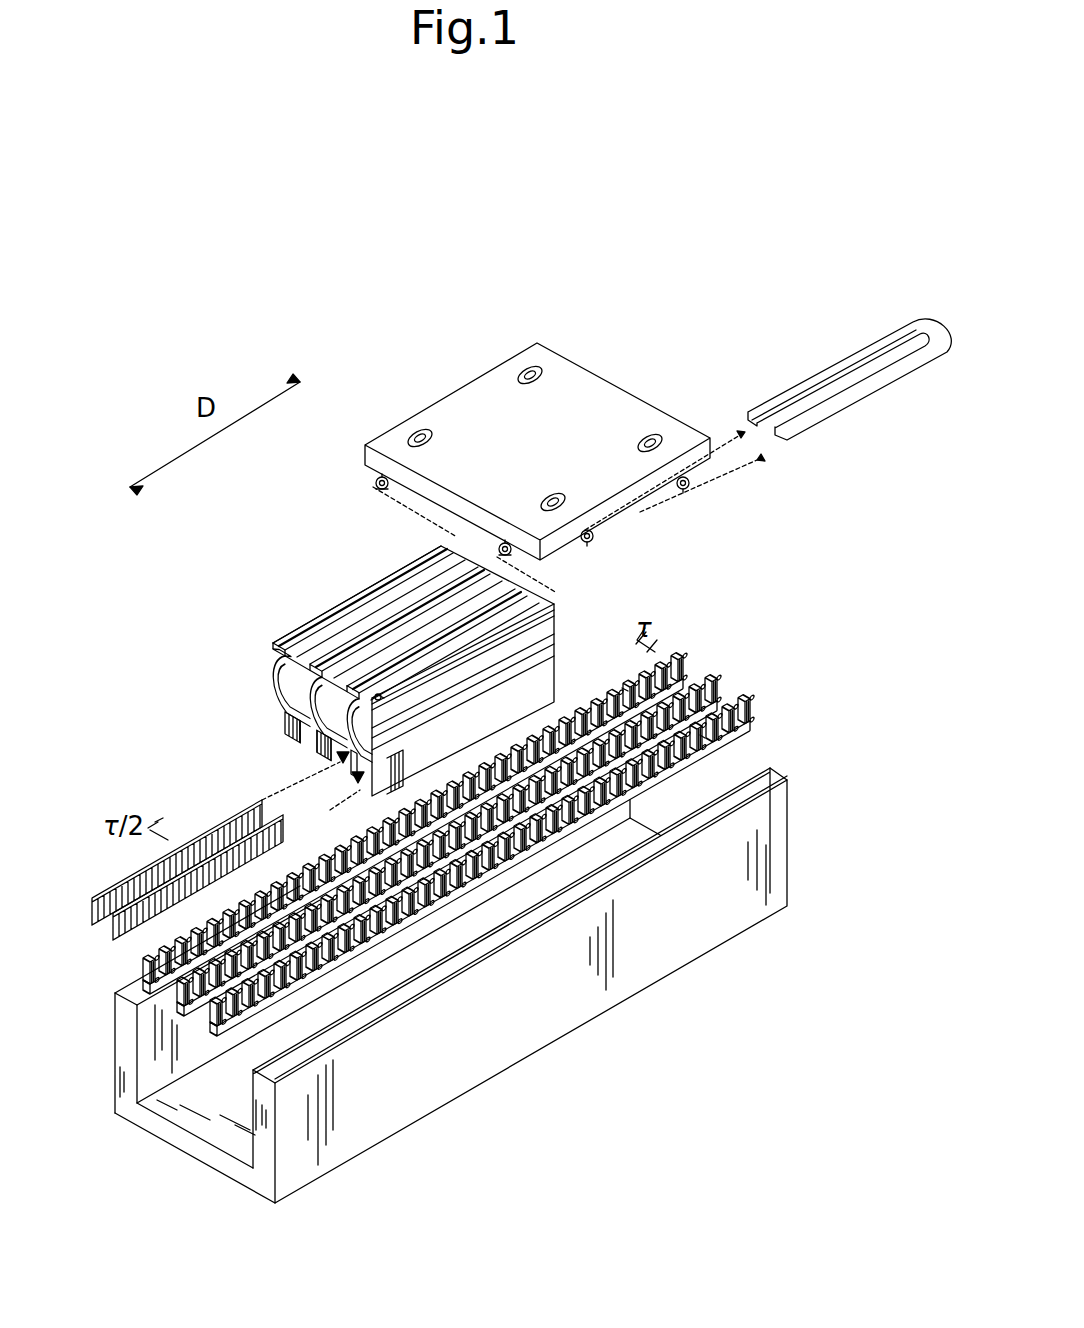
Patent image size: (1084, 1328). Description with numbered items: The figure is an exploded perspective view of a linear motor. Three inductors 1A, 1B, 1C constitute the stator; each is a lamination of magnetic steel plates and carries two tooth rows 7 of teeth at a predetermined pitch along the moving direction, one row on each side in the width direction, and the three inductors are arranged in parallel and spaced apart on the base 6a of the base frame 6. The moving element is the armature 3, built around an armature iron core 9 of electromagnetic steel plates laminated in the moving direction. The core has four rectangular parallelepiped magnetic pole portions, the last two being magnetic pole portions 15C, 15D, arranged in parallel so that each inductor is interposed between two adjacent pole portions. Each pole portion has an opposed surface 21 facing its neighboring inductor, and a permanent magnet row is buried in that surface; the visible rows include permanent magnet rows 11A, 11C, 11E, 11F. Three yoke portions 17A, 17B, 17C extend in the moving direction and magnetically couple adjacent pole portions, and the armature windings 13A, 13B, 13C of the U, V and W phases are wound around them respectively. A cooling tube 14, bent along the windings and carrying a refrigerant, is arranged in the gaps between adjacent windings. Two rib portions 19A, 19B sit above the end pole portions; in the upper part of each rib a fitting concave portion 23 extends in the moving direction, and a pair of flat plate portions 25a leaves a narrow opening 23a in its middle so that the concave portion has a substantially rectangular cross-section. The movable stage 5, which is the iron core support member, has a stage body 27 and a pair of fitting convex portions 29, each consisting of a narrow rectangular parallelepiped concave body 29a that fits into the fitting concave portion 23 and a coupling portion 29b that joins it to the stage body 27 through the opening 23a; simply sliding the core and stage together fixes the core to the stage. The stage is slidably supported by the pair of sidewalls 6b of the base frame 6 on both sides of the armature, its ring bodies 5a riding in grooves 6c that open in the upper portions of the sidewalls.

The inductor 1A is at (640, 680).
The inductor 1B is at (720, 668).
The inductor 1C is at (745, 730).
The armature 3 is at (354, 680).
The movable stage 5 is at (529, 470).
The ring bodies 5a is at (683, 490).
The base frame 6 is at (419, 992).
The base 6a is at (195, 1150).
The sidewalls 6b is at (115, 1060).
The grooves 6c is at (115, 990).
The tooth rows 7 is at (628, 700).
The armature iron core 9 is at (548, 632).
The permanent magnet row 11A is at (292, 727).
The permanent magnet row 11C is at (324, 745).
The permanent magnet row 11E is at (135, 880).
The permanent magnet row 11F is at (172, 893).
The armature winding 13A is at (274, 646).
The armature winding 13B is at (312, 663).
The armature winding 13C is at (330, 650).
The cooling tube 14 is at (810, 388).
The magnetic pole portion 15C is at (354, 763).
The magnetic pole portion 15D is at (372, 790).
The yoke portion 17A is at (291, 687).
The yoke portion 17B is at (328, 708).
The yoke portion 17C is at (359, 727).
The rib portion 19A is at (282, 652).
The rib portion 19B is at (385, 710).
The opposed surface 21 is at (290, 725).
The fitting concave portion 23 is at (316, 674).
The opening 23a is at (400, 555).
The flat plate portions 25a is at (400, 600).
The stage body 27 is at (557, 410).
The fitting convex portions 29 is at (491, 492).
The concave body 29a is at (378, 488).
The coupling portion 29b is at (378, 470).